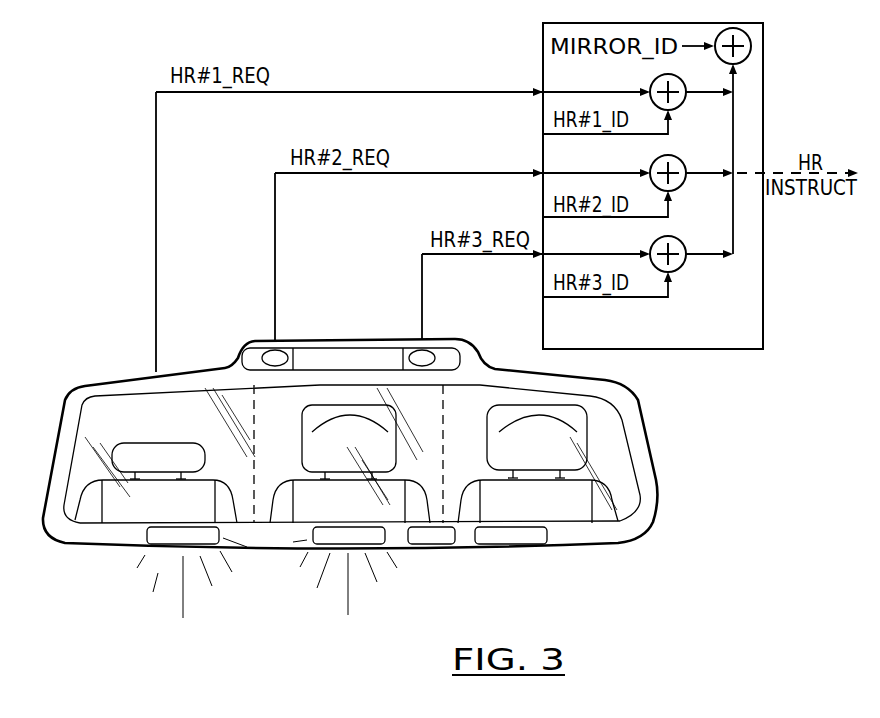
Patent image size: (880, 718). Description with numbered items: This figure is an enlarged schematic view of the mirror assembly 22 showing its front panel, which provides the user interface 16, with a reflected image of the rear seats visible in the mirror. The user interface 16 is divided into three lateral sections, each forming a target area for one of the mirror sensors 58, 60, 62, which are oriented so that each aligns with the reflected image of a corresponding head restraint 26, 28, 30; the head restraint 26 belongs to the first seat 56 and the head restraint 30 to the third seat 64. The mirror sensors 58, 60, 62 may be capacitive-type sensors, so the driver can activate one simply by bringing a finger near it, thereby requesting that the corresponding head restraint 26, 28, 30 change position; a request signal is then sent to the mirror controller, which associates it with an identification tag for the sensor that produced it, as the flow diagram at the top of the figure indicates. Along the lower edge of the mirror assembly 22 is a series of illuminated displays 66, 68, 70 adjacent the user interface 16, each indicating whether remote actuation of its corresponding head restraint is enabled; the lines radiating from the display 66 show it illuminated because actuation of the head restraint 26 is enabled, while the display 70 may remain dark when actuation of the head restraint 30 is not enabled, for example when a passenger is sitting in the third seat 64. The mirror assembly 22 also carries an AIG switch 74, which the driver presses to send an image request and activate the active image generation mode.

The user interface 16 is at (185, 400).
The mirror assembly 22 is at (60, 383).
The head restraint 26 is at (150, 443).
The head restraint 28 is at (352, 405).
The head restraint 30 is at (518, 405).
The first seat 56 is at (72, 500).
The mirror sensor 58 is at (127, 436).
The mirror sensor 60 is at (293, 421).
The mirror sensor 62 is at (480, 423).
The third seat 64 is at (622, 508).
The illuminated display 66 is at (145, 531).
The illuminated display 68 is at (310, 532).
The illuminated display 70 is at (548, 530).
The AIG switch 74 is at (432, 546).